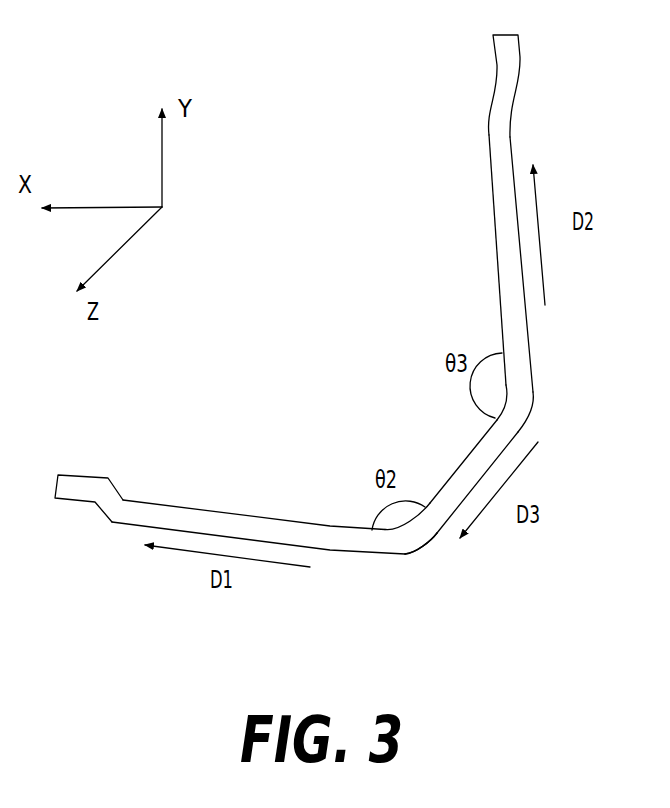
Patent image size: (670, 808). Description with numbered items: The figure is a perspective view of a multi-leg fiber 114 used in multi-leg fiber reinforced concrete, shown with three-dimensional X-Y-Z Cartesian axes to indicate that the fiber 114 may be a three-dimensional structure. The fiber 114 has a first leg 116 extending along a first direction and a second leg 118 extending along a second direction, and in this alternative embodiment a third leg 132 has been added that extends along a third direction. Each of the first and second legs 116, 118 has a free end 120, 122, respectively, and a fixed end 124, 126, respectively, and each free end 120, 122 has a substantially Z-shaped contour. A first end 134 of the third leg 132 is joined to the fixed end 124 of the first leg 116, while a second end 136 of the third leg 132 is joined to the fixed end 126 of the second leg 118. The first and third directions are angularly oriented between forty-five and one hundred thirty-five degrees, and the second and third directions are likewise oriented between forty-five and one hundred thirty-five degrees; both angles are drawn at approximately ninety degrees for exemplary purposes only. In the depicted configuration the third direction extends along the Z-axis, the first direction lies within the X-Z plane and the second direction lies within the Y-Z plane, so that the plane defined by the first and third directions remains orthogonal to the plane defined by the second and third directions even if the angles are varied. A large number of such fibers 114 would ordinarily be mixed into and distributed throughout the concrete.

The fiber 114 is at (388, 246).
The first leg 116 is at (202, 508).
The second leg 118 is at (490, 185).
The free end 120 is at (90, 475).
The free end 122 is at (518, 58).
The fixed end 124 is at (362, 553).
The fixed end 126 is at (532, 368).
The third leg 132 is at (455, 468).
The first end 134 is at (430, 540).
The second end 136 is at (525, 418).